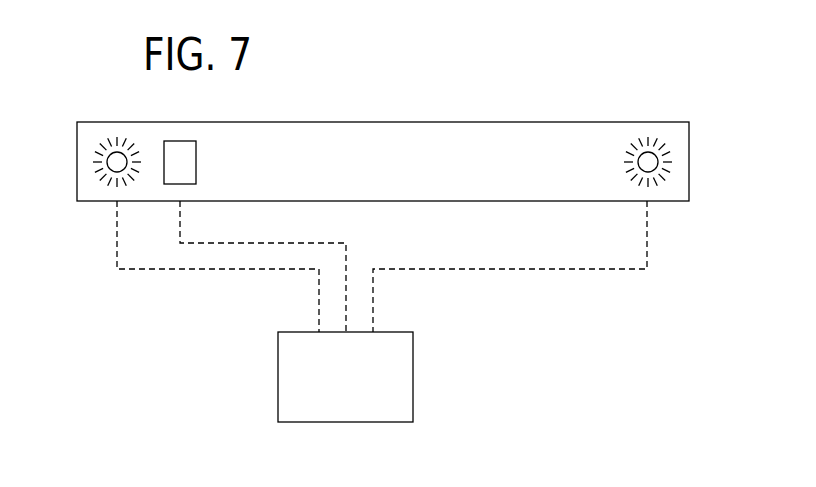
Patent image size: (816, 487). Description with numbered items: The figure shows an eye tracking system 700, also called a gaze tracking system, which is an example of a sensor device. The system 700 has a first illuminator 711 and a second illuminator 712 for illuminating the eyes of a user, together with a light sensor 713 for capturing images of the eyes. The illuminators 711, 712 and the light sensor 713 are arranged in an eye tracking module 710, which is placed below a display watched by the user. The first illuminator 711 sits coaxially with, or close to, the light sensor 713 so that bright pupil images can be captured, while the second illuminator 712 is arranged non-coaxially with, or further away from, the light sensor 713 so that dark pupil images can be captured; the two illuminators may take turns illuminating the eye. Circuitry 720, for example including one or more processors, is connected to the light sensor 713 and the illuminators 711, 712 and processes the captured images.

The eye tracking system 700 is at (546, 88).
The eye tracking module 710 is at (428, 122).
The first illuminator 711 is at (110, 153).
The second illuminator 712 is at (657, 164).
The light sensor 713 is at (196, 167).
The circuitry 720 is at (413, 360).